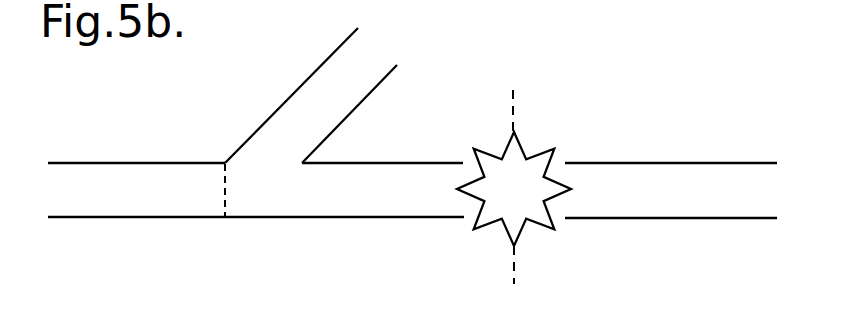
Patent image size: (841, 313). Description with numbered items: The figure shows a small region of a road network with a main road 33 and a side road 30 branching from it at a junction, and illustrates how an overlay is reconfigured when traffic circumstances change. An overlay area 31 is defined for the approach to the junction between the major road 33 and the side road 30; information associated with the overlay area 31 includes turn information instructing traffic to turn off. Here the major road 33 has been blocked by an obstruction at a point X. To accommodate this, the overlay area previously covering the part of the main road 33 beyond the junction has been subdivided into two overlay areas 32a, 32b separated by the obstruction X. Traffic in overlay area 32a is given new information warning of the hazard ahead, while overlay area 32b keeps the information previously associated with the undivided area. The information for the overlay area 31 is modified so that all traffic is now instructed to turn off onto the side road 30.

The side road 30 is at (283, 102).
The overlay area 31 is at (106, 217).
The overlay area 32a is at (396, 217).
The overlay area 32b is at (665, 218).
The main road 33 is at (385, 163).
The obstruction X is at (534, 156).